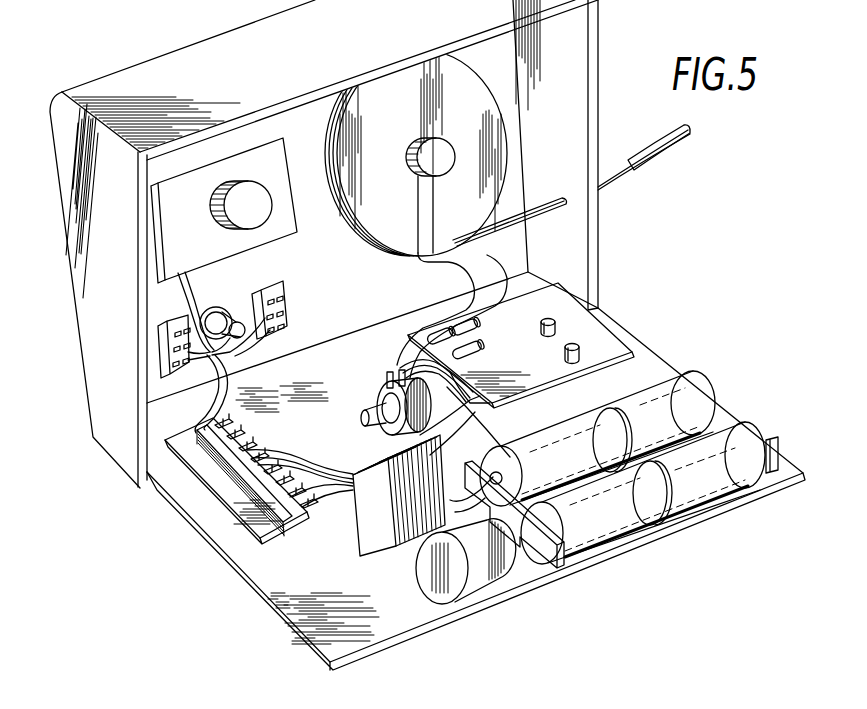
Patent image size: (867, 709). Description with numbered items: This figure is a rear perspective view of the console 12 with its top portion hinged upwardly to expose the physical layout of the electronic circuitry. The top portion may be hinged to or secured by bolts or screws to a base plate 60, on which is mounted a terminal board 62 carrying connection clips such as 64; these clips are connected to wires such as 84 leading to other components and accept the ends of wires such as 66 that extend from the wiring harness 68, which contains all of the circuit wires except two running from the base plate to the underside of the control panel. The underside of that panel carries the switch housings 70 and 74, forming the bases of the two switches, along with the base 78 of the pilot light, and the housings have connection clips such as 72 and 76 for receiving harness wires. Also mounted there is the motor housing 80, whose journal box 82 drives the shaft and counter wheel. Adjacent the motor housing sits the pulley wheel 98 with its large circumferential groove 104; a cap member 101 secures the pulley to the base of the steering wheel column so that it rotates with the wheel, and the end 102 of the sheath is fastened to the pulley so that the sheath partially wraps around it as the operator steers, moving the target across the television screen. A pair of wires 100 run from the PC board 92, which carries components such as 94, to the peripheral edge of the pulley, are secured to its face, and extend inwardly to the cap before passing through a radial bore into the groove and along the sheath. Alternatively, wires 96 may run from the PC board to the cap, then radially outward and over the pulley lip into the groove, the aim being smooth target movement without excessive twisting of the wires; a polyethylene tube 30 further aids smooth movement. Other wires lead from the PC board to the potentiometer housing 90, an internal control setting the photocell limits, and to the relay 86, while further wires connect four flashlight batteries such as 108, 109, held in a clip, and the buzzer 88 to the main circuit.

The console 12 is at (87, 292).
The tube 30 is at (654, 138).
The base plate 60 is at (418, 612).
The terminal board 62 is at (252, 538).
The connection clips 64 is at (296, 513).
The wires 66 is at (237, 430).
The wiring harness 68 is at (213, 404).
The switch housing 70 is at (280, 292).
The connection clips 72 is at (287, 306).
The switch housing 74 is at (157, 329).
The connection clips 76 is at (160, 355).
The base of pilot light 78 is at (230, 310).
The motor housing 80 is at (157, 203).
The journal box 82 is at (255, 200).
The wires 84 is at (335, 488).
The relay 86 is at (372, 522).
The buzzer 88 is at (483, 562).
The potentiometer housing 90 is at (363, 417).
The PC board 92 is at (563, 353).
The components 94 is at (537, 321).
The wires 96 is at (507, 270).
The pulley wheel 98 is at (507, 137).
The wires 100 is at (433, 203).
The cap member 101 is at (448, 152).
The end of sheath 102 is at (559, 203).
The circumferential groove 104 is at (345, 113).
The flashlight battery 108 is at (717, 480).
The flashlight battery 109 is at (637, 517).